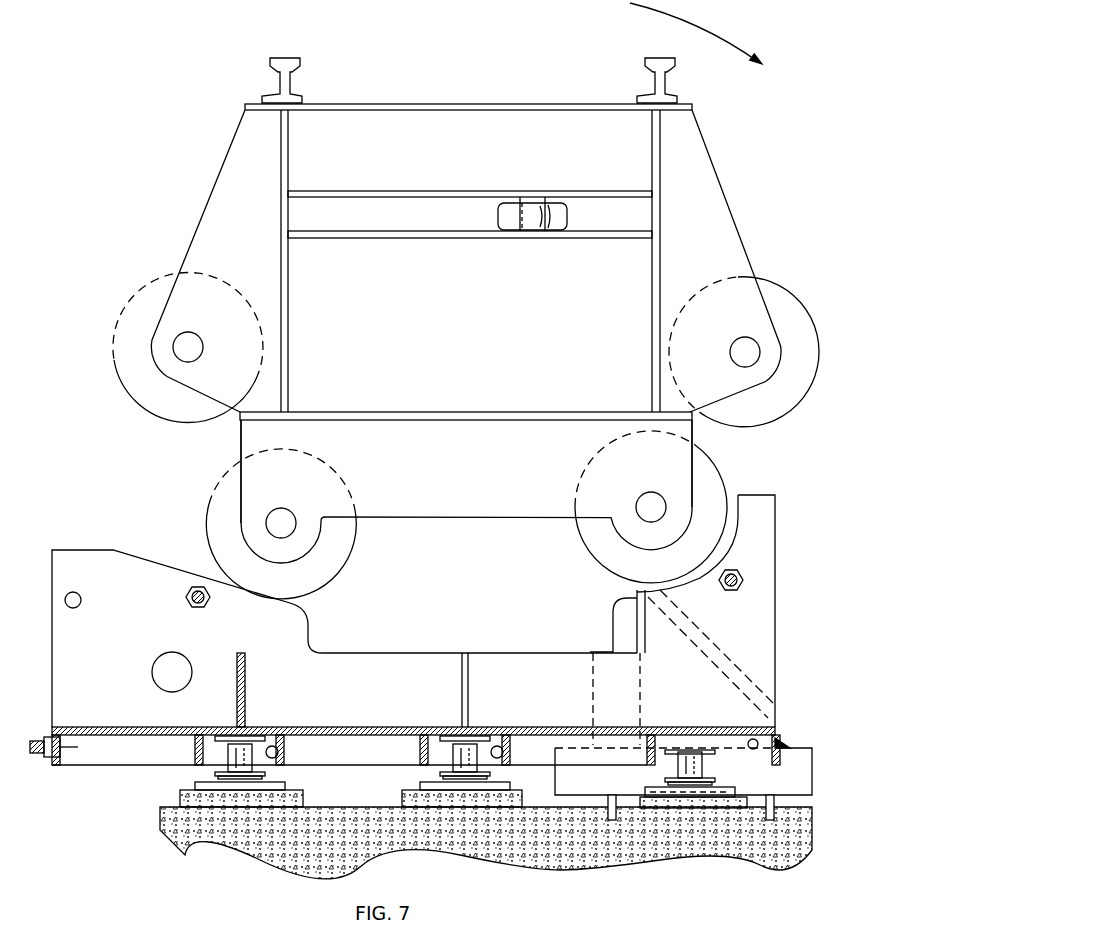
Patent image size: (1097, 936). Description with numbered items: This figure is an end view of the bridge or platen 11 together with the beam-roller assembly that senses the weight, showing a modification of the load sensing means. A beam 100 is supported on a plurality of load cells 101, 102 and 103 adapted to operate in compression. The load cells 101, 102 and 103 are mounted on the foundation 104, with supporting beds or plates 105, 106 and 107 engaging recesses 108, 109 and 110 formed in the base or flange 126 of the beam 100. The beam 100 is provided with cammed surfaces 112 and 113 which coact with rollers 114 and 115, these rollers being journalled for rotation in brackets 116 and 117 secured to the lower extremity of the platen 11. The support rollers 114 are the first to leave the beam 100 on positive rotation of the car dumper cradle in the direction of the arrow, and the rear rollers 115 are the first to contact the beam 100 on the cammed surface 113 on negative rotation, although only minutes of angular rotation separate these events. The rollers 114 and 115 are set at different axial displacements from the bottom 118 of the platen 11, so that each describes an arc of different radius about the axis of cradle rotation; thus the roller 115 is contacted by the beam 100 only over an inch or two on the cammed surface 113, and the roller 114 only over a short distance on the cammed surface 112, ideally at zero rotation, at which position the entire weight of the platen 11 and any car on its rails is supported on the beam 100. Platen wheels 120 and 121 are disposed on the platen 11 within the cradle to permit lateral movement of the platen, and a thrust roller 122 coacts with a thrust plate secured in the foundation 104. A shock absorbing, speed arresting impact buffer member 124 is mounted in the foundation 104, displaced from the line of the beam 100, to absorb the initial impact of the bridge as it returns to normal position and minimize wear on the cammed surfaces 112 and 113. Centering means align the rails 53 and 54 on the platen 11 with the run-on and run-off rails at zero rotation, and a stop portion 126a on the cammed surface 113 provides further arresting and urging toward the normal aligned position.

The bridge or platen 11 is at (531, 98).
The rail 53 is at (296, 62).
The rail 54 is at (650, 62).
The beam 100 is at (752, 636).
The load cell 101 is at (265, 770).
The load cell 102 is at (473, 768).
The load cell 103 is at (700, 770).
The foundation 104 is at (196, 838).
The supporting bed or plate 105 is at (248, 730).
The supporting bed or plate 106 is at (468, 733).
The supporting bed or plate 107 is at (692, 733).
The recess 108 is at (284, 752).
The recess 109 is at (500, 752).
The recess 110 is at (756, 740).
The cammed surface 112 is at (148, 565).
The cammed surface 113 is at (670, 588).
The roller 114 is at (323, 565).
The roller 115 is at (605, 552).
The bracket 116 is at (256, 516).
The bracket 117 is at (645, 538).
The bottom of platen 118 is at (481, 425).
The platen wheel 120 is at (130, 372).
The platen wheel 121 is at (765, 418).
The thrust roller 122 is at (520, 232).
The impact buffer member 124 is at (614, 627).
The base or flange of beam 126 is at (374, 728).
The stop portion 126a is at (746, 500).